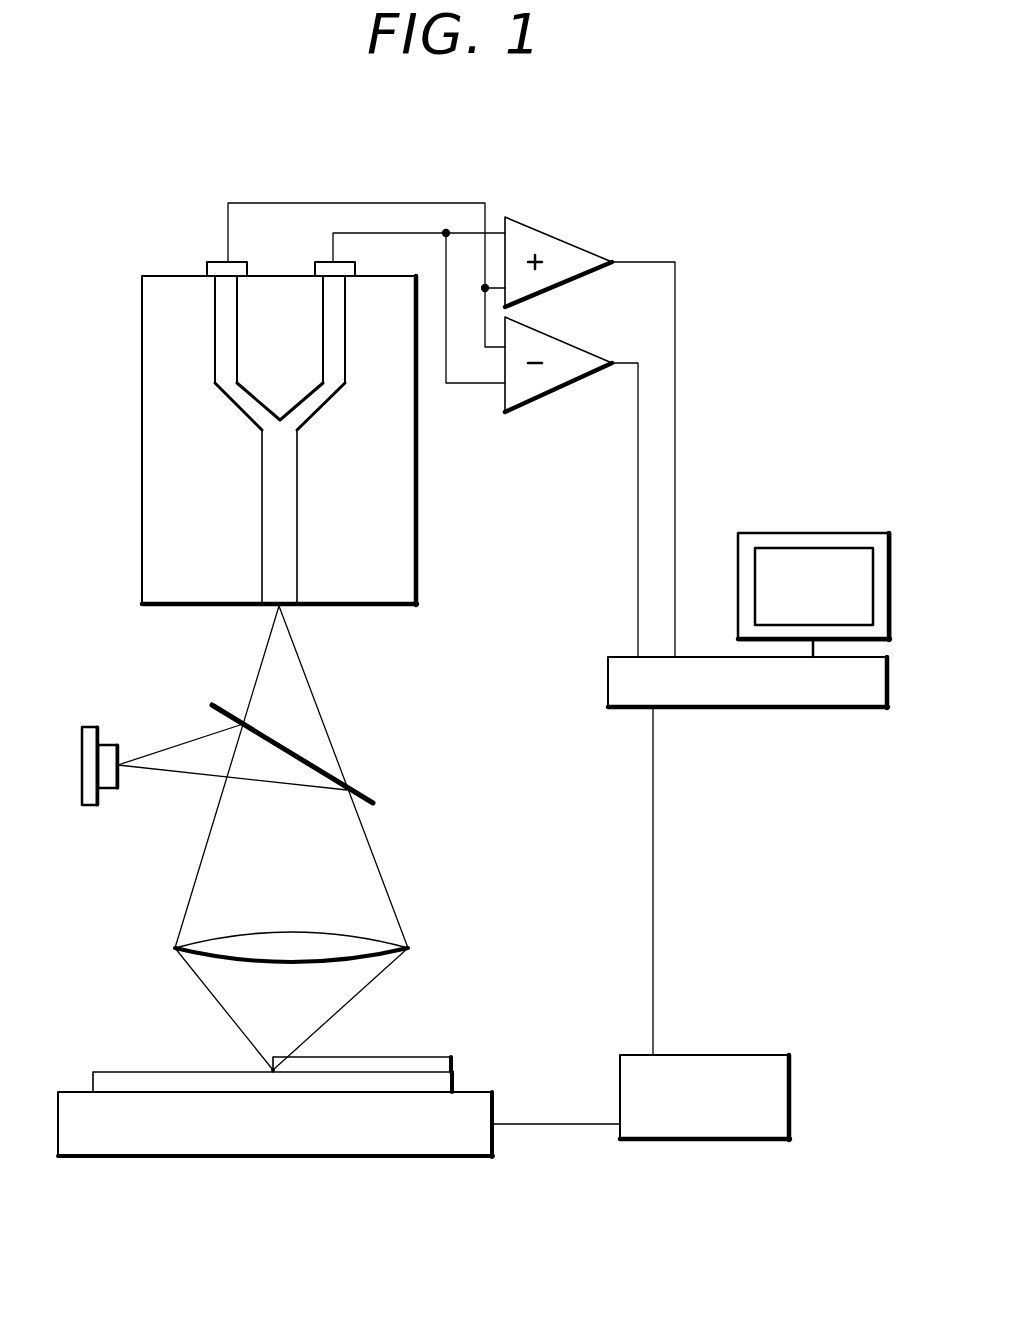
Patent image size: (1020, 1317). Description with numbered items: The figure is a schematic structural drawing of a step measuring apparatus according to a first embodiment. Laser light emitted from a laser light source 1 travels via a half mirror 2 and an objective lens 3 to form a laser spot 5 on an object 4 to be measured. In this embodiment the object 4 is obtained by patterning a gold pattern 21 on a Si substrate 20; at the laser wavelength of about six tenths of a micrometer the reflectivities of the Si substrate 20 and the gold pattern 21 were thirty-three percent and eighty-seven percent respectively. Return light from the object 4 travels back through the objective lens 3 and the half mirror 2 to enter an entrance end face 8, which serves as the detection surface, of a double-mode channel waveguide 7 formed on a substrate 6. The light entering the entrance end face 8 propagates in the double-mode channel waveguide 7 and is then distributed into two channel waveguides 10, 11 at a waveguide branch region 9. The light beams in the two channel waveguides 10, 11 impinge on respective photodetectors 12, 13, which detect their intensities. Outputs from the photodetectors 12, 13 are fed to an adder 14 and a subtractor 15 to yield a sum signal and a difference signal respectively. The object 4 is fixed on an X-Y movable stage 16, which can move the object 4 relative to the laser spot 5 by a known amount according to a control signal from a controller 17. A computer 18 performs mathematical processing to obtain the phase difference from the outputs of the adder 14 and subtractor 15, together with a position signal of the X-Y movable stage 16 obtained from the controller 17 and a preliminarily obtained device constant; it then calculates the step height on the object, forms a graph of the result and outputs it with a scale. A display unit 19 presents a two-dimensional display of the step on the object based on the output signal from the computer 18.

The laser light source 1 is at (88, 742).
The half mirror 2 is at (373, 797).
The objective lens 3 is at (178, 950).
The object to be measured 4 is at (430, 1005).
The laser spot 5 is at (268, 1068).
The substrate 6 is at (170, 567).
The double-mode channel waveguide 7 is at (278, 528).
The entrance end face 8 is at (273, 612).
The waveguide branch region 9 is at (273, 430).
The channel waveguide 10 is at (225, 338).
The channel waveguide 11 is at (337, 372).
The photodetector 12 is at (225, 267).
The photodetector 13 is at (343, 268).
The adder 14 is at (570, 260).
The subtractor 15 is at (538, 382).
The X-Y movable stage 16 is at (462, 1142).
The controller 17 is at (732, 1128).
The computer 18 is at (777, 695).
The display unit 19 is at (747, 565).
The Si substrate 20 is at (455, 1083).
The gold pattern 21 is at (417, 1067).